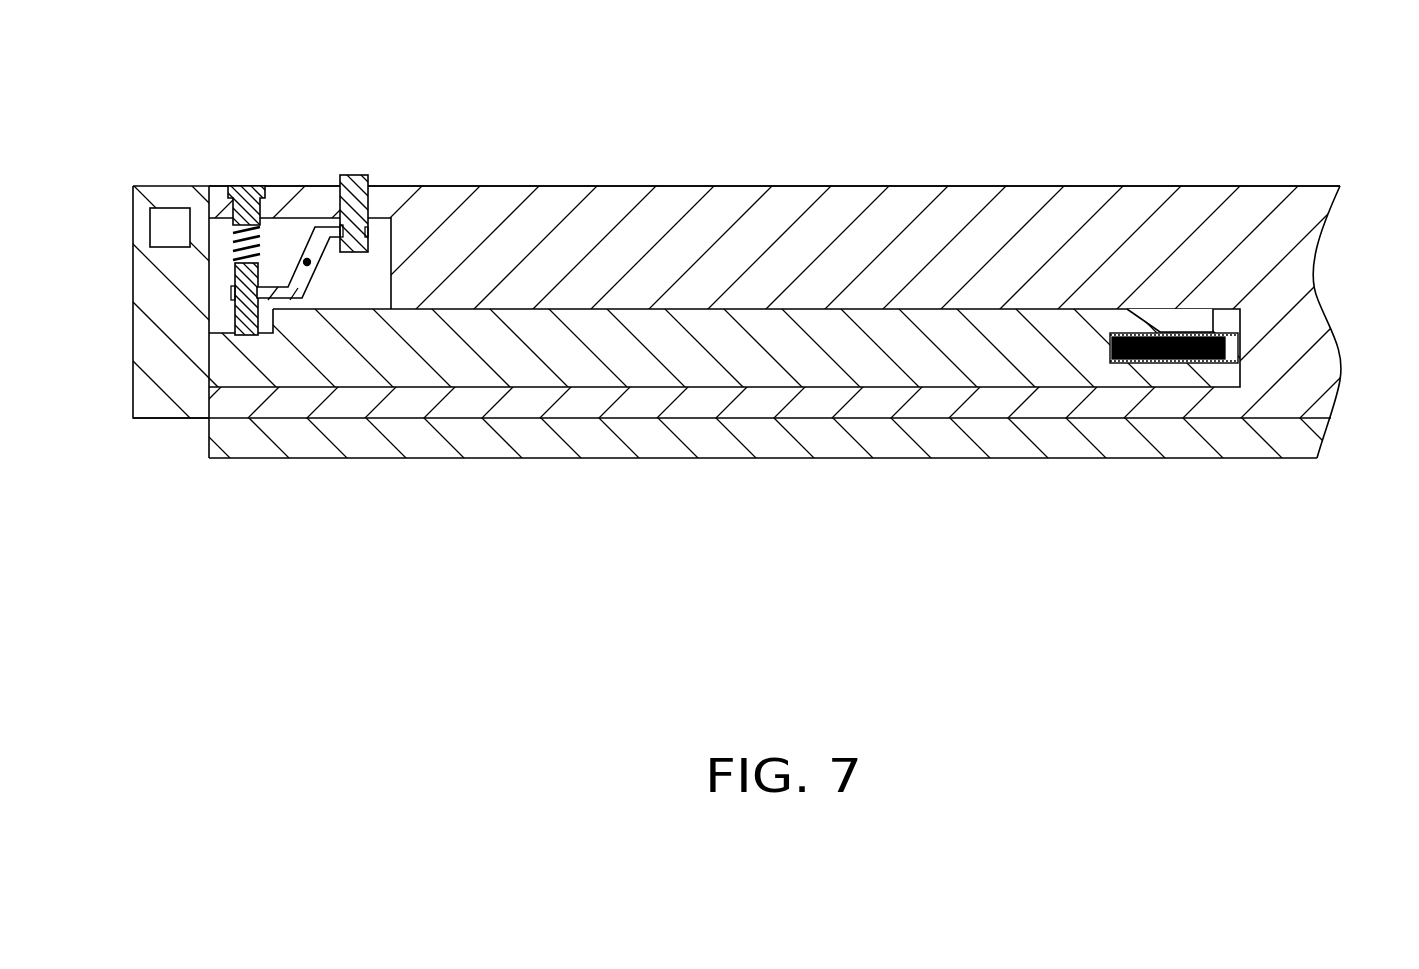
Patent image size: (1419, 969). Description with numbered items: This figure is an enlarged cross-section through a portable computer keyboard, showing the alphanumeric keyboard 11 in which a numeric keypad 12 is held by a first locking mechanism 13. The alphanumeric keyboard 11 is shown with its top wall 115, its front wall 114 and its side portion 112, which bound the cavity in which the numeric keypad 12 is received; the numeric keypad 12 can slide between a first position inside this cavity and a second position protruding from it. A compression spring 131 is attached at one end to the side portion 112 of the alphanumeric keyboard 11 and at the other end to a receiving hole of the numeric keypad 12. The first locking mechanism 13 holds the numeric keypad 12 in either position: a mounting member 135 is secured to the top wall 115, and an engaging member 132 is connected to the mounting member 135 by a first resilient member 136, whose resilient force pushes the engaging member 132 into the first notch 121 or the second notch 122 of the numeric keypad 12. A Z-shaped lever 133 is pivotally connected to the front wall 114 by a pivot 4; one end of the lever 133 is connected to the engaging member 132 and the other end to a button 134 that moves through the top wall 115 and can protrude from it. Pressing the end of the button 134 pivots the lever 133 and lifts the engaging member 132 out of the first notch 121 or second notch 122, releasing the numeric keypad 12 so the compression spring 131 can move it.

The pivot 4 is at (307, 262).
The alphanumeric keyboard 11 is at (950, 182).
The numeric keypad 12 is at (873, 353).
The first locking mechanism 13 is at (257, 185).
The side portion 112 is at (1280, 333).
The front wall 114 is at (350, 290).
The top wall 115 is at (647, 215).
The first notch 121 is at (238, 333).
The second notch 122 is at (1185, 322).
The compression spring 131 is at (1158, 328).
The engaging member 132 is at (243, 277).
The lever 133 is at (330, 233).
The button 134 is at (355, 177).
The mounting member 135 is at (247, 200).
The first resilient member 136 is at (240, 233).